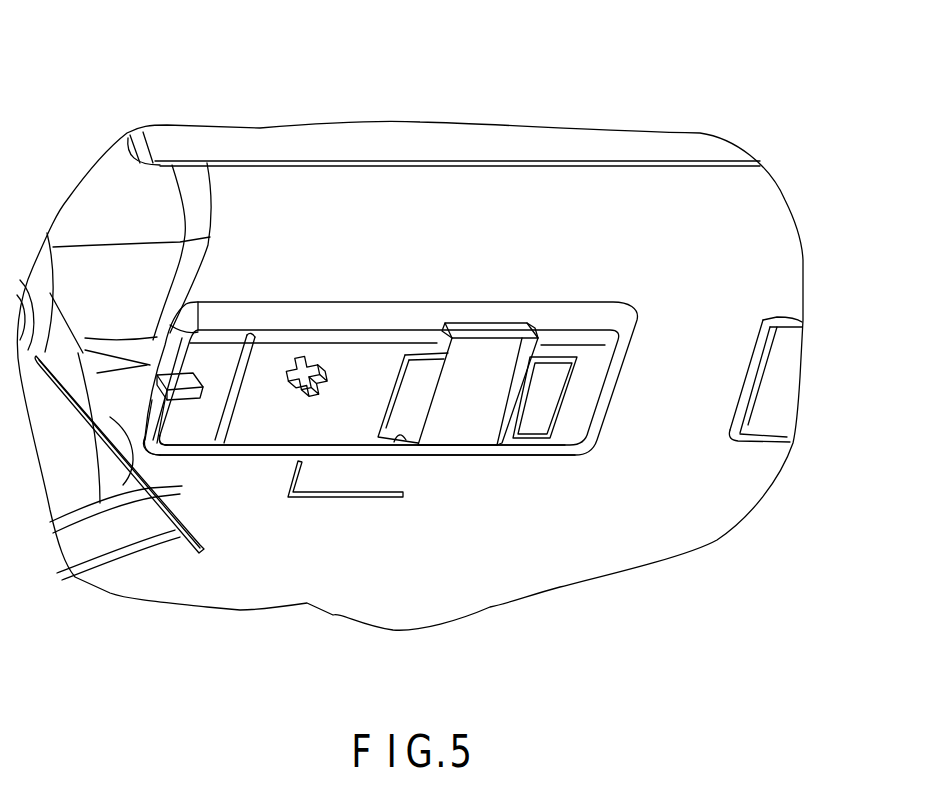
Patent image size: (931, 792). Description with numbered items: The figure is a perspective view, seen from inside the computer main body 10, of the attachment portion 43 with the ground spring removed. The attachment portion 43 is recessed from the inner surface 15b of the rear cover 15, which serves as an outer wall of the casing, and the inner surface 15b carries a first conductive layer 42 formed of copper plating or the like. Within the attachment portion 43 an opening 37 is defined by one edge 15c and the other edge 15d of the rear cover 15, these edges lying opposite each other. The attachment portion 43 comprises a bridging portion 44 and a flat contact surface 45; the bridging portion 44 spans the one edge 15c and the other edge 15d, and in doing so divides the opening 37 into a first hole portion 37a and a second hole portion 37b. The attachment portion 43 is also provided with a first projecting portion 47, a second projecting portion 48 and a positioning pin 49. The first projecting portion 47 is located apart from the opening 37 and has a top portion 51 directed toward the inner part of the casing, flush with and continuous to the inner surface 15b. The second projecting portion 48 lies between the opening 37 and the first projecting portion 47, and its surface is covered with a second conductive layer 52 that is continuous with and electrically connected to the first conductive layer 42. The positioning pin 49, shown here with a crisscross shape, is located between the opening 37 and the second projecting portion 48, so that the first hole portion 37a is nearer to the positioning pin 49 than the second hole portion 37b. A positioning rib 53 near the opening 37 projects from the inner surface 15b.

The computer main body 10 is at (117, 75).
The rear cover 15 is at (353, 177).
The inner surface 15b is at (477, 177).
The one edge 15c is at (428, 358).
The other edge 15d is at (401, 433).
The first conductive layer 42 is at (538, 230).
The attachment portion 43 is at (344, 340).
The bridging portion 44 is at (462, 427).
The flat contact surface 45 is at (266, 438).
The first projecting portion 47 is at (160, 378).
The second projecting portion 48 is at (248, 338).
The positioning pin 49 is at (307, 355).
The top portion 51 is at (175, 375).
The second conductive layer 52 is at (216, 438).
The positioning rib 53 is at (360, 500).
The opening 37 is at (553, 356).
The first hole portion 37a is at (405, 394).
The second hole portion 37b is at (552, 396).